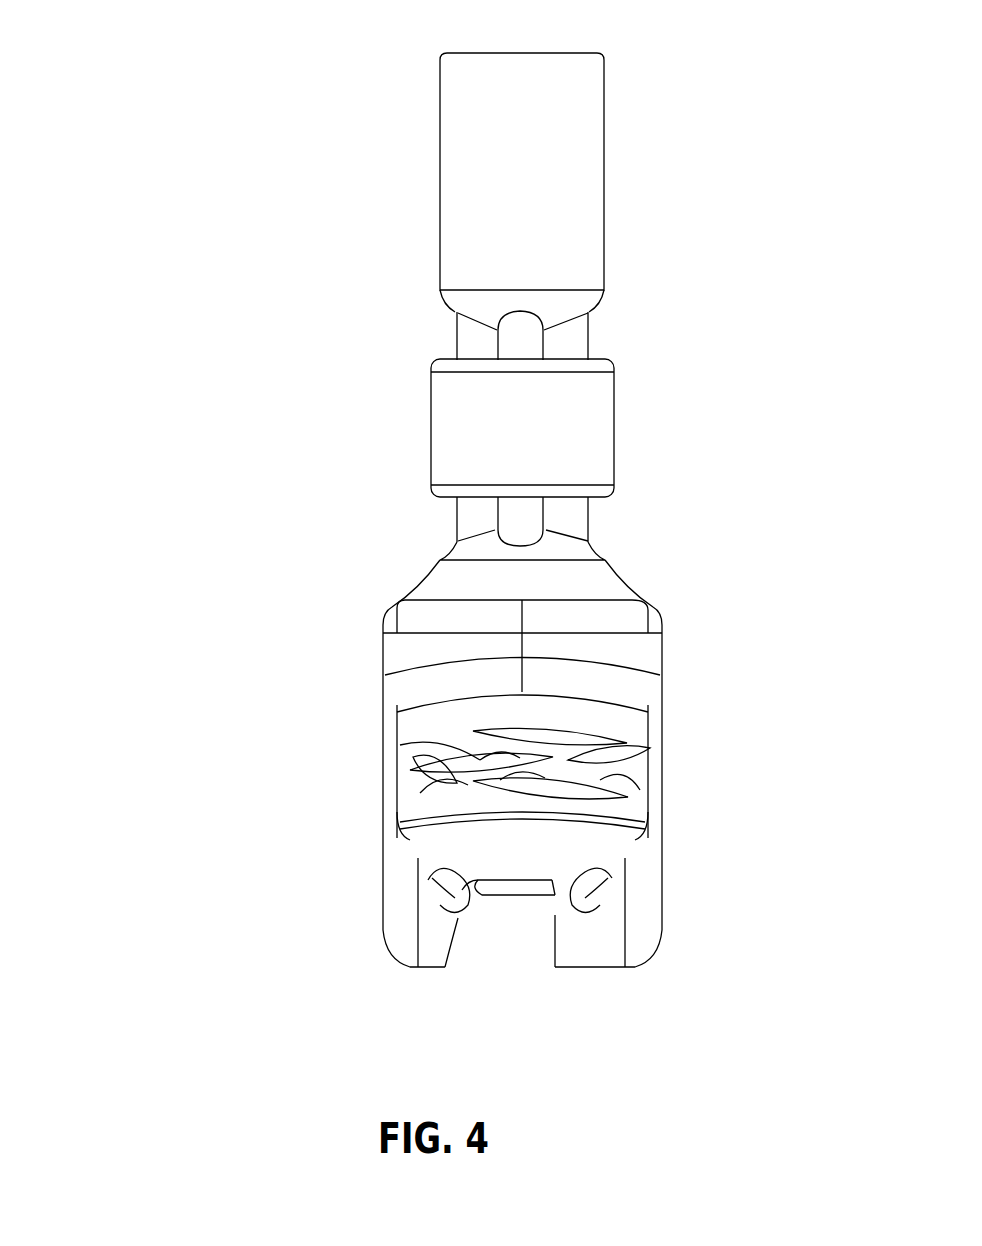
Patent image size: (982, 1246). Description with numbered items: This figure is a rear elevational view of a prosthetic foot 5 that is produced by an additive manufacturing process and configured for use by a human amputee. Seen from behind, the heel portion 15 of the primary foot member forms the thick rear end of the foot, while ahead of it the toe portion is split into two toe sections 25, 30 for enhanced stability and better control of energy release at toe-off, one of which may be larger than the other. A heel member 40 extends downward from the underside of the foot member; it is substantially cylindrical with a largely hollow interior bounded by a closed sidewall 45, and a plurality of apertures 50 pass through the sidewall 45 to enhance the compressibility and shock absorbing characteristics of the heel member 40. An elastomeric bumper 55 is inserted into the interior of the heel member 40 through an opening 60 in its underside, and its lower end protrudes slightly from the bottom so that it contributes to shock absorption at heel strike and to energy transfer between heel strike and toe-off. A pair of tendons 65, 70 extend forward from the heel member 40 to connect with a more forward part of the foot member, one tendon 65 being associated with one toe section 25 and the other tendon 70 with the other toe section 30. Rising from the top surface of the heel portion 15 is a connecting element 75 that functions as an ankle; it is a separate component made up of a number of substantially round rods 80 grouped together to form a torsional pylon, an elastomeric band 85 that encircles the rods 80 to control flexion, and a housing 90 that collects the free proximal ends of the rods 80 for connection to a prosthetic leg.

The prosthetic foot 5 is at (138, 190).
The heel portion 15 is at (672, 603).
The toe section 25 is at (648, 933).
The toe section 30 is at (395, 927).
The heel member 40 is at (664, 786).
The sidewall 45 is at (628, 725).
The apertures 50 is at (447, 760).
The bumper 55 is at (520, 897).
The opening 60 is at (552, 880).
The tendon 65 is at (593, 890).
The tendon 70 is at (443, 897).
The connecting element 75 is at (678, 168).
The rods 80 is at (582, 340).
The elastomeric band 85 is at (450, 428).
The housing 90 is at (585, 90).